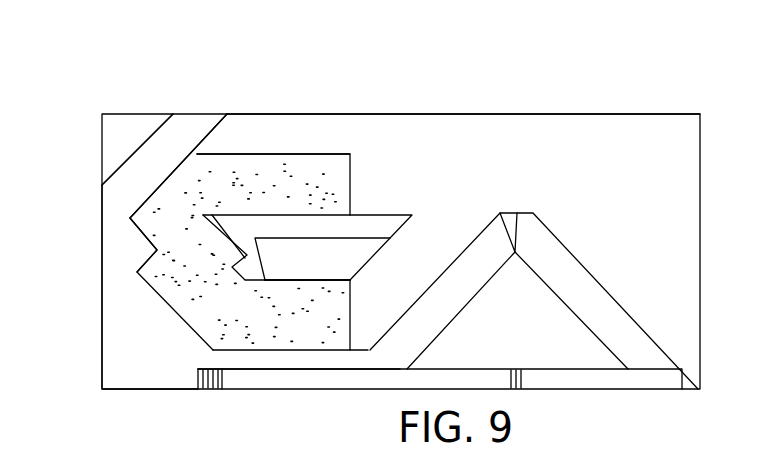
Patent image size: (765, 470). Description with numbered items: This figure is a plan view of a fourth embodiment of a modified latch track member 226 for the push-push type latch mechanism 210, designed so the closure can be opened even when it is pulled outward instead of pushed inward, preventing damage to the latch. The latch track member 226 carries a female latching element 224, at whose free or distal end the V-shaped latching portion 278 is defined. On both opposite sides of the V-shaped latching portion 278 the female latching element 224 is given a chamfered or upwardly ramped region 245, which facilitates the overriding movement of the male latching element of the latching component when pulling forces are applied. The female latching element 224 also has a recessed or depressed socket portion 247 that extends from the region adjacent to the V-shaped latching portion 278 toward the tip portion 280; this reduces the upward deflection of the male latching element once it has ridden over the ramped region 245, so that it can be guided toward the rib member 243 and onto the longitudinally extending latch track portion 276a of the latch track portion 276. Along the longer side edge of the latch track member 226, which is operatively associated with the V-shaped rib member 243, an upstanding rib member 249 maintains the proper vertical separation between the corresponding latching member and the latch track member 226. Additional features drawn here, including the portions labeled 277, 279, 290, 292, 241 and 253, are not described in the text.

The latch mechanism 210 is at (508, 85).
The latch track member 226 is at (660, 114).
The latch track portion 276 is at (325, 135).
The longitudinally extending latch track portion 276a is at (543, 152).
The serrated edge 277 is at (140, 228).
The adhesive region 279 is at (175, 172).
The chamfered or upwardly ramped region 245 is at (233, 230).
The female latching element 224 is at (360, 227).
The tip portion 280 is at (410, 213).
The V-shaped latching portion 278 is at (240, 255).
The rib member 243 is at (453, 298).
The tooth 292 is at (155, 257).
The side wall 290 is at (178, 318).
The adhesive fill 241 is at (263, 330).
The gap 253 is at (298, 358).
The recessed or depressed socket portion 247 is at (320, 270).
The upstanding rib member 249 is at (585, 380).